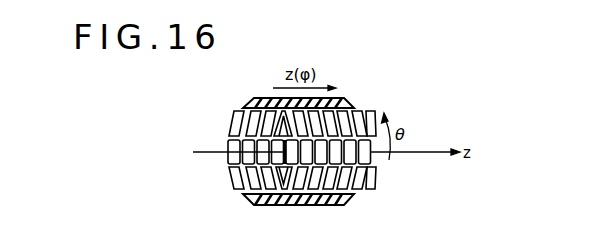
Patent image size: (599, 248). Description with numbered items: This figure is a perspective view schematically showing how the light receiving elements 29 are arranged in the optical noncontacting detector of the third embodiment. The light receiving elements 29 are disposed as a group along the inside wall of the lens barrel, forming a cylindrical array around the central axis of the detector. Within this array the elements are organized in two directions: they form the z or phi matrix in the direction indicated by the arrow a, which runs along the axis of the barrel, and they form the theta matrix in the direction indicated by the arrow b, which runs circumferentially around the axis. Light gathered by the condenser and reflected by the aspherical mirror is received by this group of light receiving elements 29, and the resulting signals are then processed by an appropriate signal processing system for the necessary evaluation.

The light receiving elements 29 is at (372, 183).
The arrow a is at (275, 88).
The arrow b is at (388, 153).